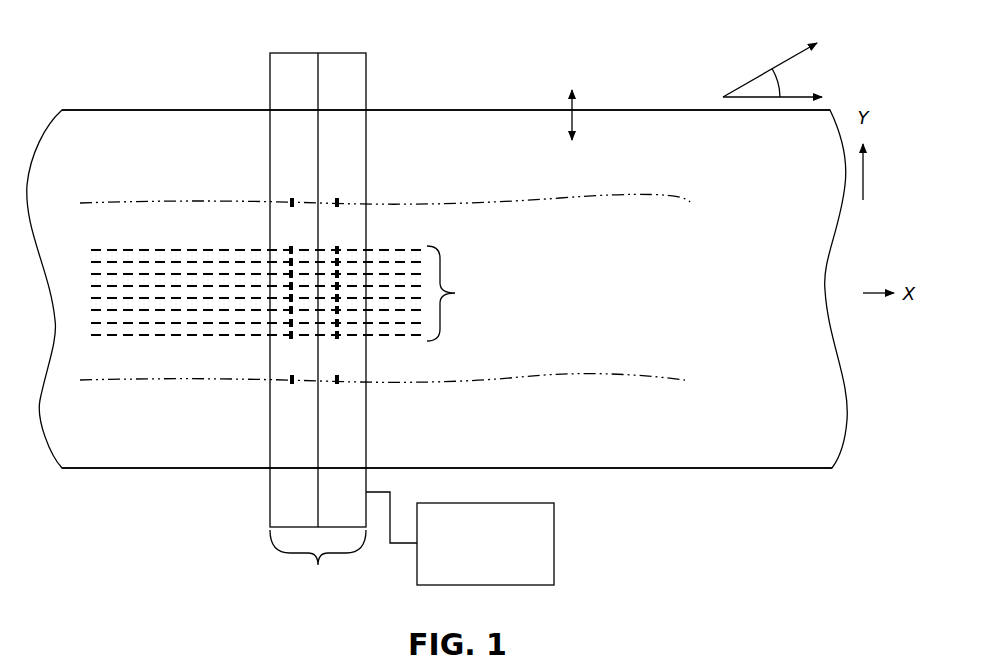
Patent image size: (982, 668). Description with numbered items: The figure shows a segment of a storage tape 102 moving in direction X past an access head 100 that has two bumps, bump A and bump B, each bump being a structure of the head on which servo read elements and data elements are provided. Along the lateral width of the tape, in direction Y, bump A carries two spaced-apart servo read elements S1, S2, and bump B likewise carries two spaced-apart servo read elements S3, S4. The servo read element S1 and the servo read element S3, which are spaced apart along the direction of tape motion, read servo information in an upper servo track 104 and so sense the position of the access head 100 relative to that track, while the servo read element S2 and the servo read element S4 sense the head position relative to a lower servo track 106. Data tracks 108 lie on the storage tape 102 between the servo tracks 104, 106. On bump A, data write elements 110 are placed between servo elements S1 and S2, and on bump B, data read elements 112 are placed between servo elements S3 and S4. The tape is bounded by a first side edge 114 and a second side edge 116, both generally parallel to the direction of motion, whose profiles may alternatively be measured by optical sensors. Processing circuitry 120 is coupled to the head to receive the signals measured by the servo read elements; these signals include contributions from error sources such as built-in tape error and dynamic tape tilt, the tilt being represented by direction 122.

The access head 100 is at (318, 300).
The storage tape 102 is at (657, 468).
The upper servo track 104 is at (622, 197).
The lower servo track 106 is at (618, 376).
The data tracks 108 is at (295, 293).
The data write elements 110 is at (287, 246).
The data read elements 112 is at (345, 246).
The first side edge 114 is at (570, 468).
The second side edge 116 is at (442, 110).
The processing circuitry 120 is at (554, 545).
The direction of tape tilt 122 is at (760, 72).
The servo read element S1 is at (286, 199).
The servo read element S2 is at (286, 386).
The servo read element S3 is at (343, 200).
The servo read element S4 is at (343, 386).